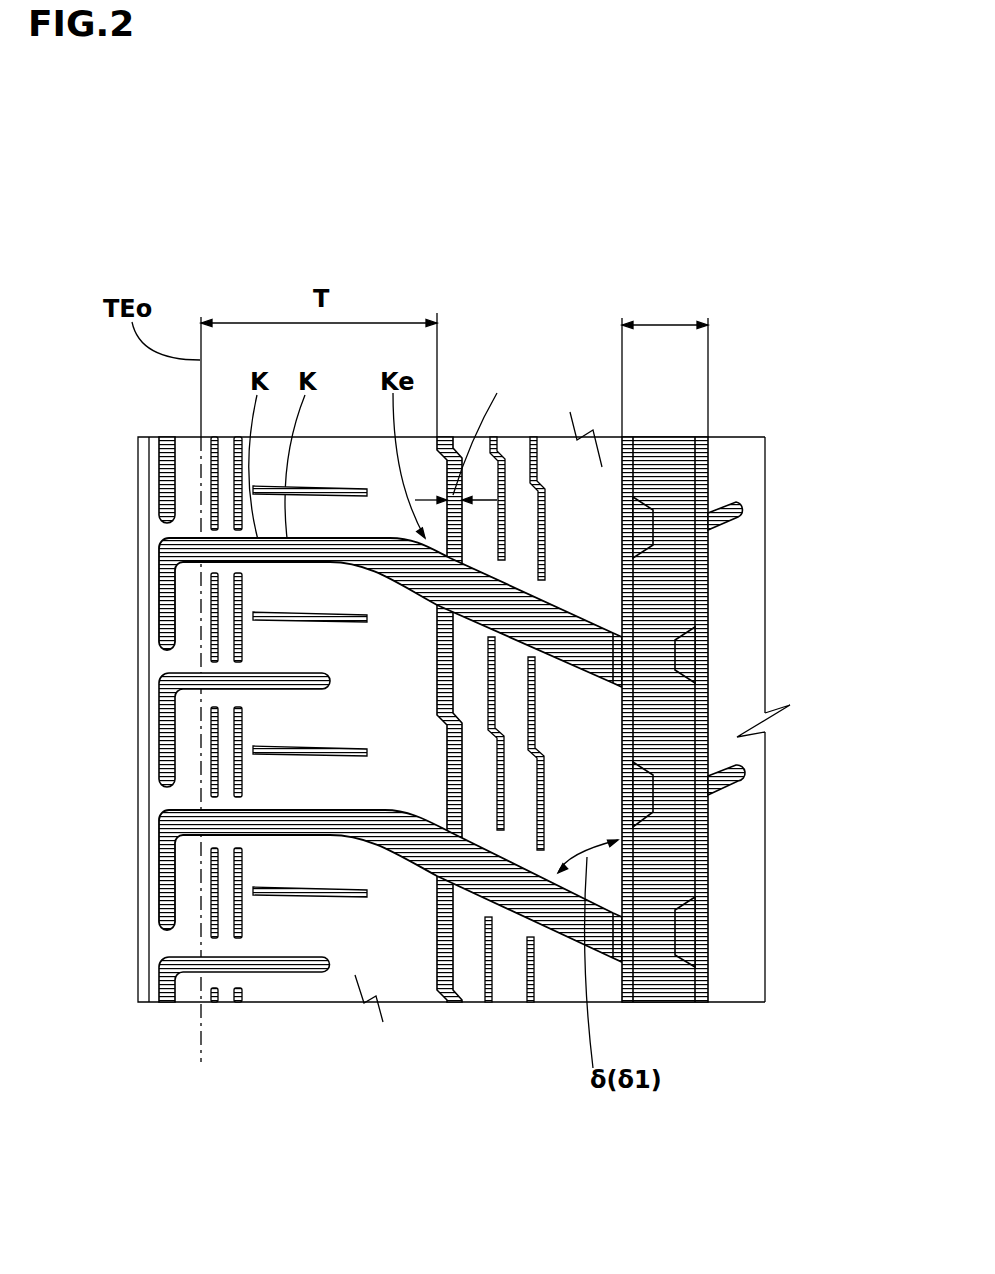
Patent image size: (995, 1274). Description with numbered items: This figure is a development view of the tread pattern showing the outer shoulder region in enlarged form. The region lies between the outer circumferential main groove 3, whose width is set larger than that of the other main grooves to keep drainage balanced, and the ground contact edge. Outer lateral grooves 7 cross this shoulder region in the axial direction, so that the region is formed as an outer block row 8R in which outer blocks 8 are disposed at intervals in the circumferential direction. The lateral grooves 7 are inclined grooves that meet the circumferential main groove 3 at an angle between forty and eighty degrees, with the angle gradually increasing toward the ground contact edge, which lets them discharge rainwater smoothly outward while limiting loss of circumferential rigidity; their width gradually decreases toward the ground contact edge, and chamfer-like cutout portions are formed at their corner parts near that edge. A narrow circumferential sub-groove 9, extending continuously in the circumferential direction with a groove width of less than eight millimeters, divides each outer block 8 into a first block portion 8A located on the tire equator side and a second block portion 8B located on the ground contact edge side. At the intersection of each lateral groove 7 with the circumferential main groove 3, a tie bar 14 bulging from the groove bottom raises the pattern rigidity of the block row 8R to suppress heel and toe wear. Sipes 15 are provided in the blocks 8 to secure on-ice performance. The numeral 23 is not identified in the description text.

The circumferential main groove 3 is at (663, 470).
The outer lateral groove 7 is at (577, 633).
The protrusion in main groove 23 is at (683, 658).
The tie bar 14 is at (630, 925).
The narrow circumferential sub-groove 9 is at (436, 968).
The sipe 15 is at (278, 897).
The outer block 8 is at (352, 825).
The first block portion 8A is at (508, 978).
The second block portion 8B is at (335, 985).
The outer block row 8R is at (623, 268).